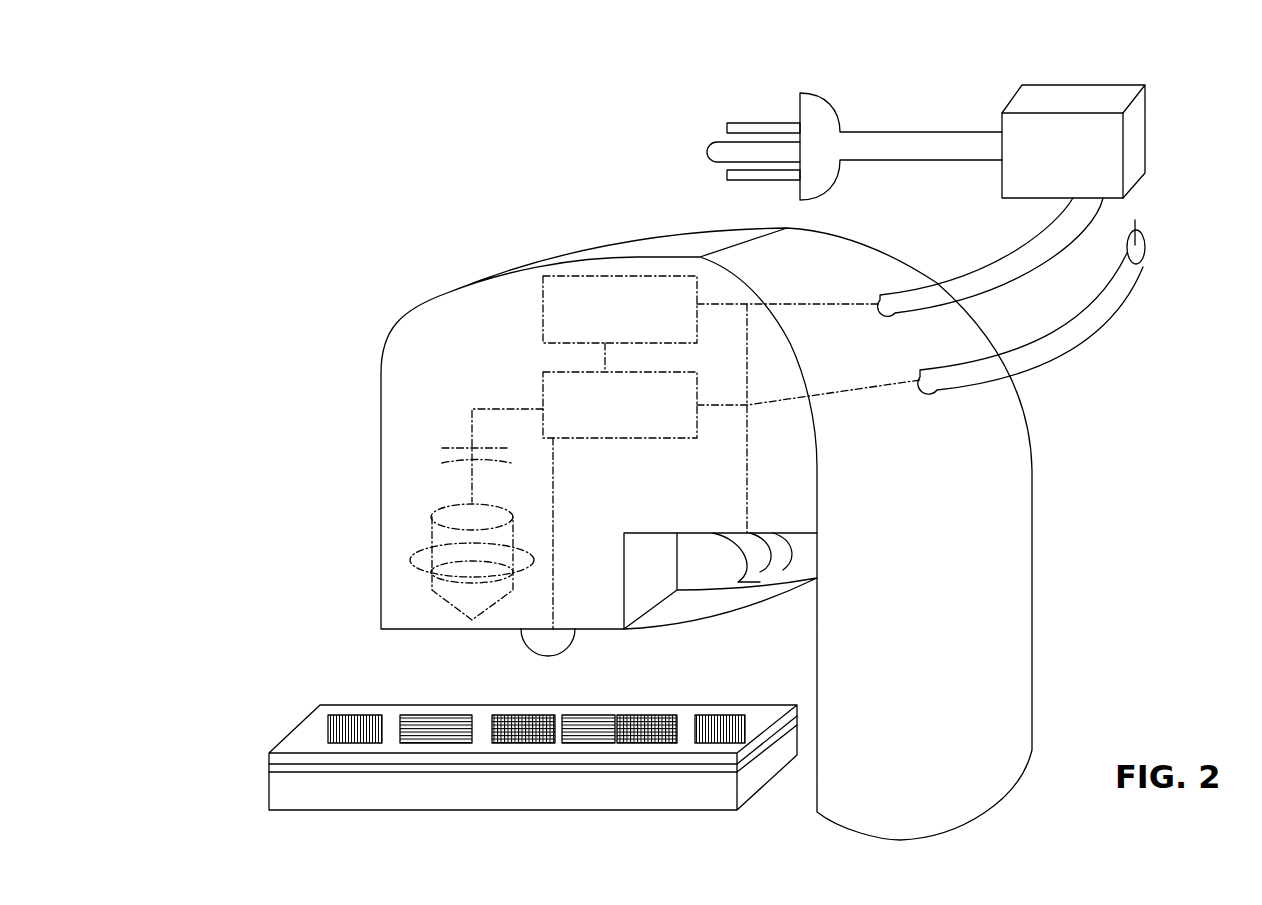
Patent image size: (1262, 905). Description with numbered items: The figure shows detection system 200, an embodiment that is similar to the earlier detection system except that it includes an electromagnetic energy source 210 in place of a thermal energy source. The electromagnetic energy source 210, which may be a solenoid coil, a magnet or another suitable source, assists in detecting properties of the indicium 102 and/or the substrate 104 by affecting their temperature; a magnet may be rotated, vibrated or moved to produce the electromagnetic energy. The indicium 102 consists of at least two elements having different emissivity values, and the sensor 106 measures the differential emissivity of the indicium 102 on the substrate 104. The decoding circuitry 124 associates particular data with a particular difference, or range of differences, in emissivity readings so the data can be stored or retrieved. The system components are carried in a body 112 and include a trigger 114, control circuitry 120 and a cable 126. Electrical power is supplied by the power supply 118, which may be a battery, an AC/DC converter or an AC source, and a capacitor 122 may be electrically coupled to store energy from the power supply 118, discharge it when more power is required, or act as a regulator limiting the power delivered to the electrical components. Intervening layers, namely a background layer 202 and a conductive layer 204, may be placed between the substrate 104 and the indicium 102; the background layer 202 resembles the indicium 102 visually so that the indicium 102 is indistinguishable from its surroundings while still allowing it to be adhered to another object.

The detection system 200 is at (768, 94).
The indicium 102 is at (350, 732).
The substrate 104 is at (472, 800).
The sensor 106 is at (552, 648).
The body 112 is at (462, 342).
The trigger 114 is at (757, 572).
The power supply 118 is at (1083, 142).
The control circuitry 120 is at (573, 385).
The capacitor 122 is at (473, 455).
The decoding circuitry 124 is at (585, 297).
The cable 126 is at (1093, 327).
The background layer 202 is at (309, 767).
The conductive layer 204 is at (328, 758).
The electromagnetic energy source 210 is at (472, 593).